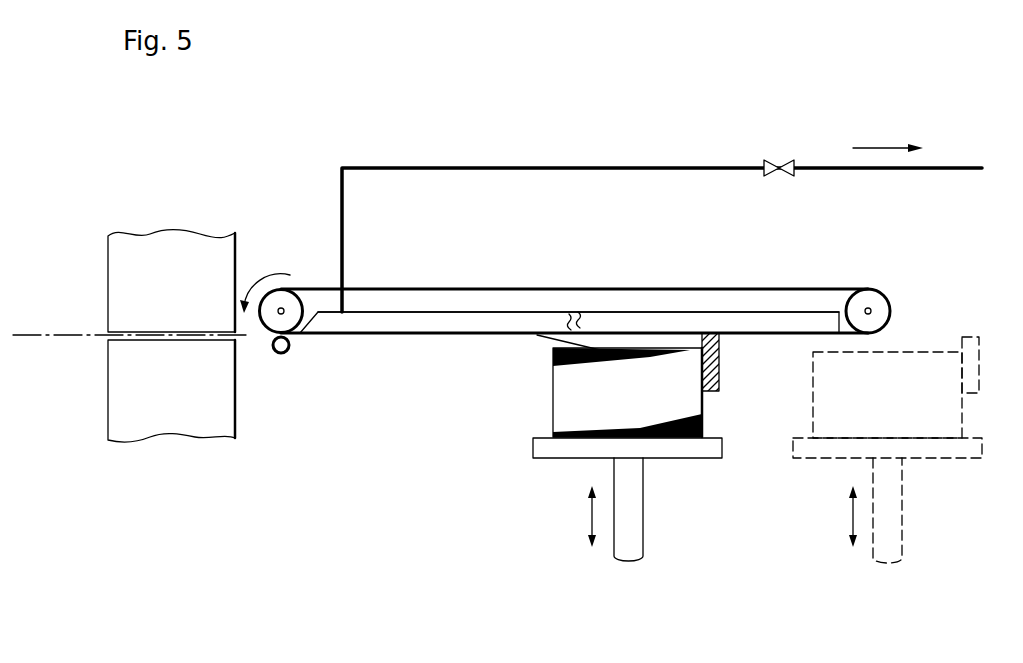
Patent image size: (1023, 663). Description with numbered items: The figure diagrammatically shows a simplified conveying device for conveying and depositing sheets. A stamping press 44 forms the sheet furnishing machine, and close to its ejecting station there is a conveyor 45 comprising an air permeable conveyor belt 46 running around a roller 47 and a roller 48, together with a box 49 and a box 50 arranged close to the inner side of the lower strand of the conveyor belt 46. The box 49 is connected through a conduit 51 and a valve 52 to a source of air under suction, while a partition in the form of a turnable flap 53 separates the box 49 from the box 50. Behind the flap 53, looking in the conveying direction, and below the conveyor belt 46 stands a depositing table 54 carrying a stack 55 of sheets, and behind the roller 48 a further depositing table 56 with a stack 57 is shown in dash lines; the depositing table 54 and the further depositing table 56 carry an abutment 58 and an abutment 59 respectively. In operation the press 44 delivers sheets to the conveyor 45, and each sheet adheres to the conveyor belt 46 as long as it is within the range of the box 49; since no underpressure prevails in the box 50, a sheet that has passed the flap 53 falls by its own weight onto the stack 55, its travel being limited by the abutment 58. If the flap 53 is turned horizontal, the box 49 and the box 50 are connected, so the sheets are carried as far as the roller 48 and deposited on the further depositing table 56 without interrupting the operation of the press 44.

The stamping press 44 is at (157, 252).
The conveyor 45 is at (395, 400).
The conveyor belt 46 is at (729, 290).
The roller 47 is at (283, 300).
The roller 48 is at (872, 302).
The box 49 is at (434, 320).
The box 50 is at (650, 320).
The conduit 51 is at (440, 168).
The valve 52 is at (779, 161).
The turnable flap 53 is at (567, 316).
The depositing table 54 is at (560, 447).
The stack 55 is at (685, 440).
The further depositing table 56 is at (820, 450).
The stack 57 is at (945, 408).
The abutment 58 is at (720, 385).
The abutment 59 is at (976, 389).